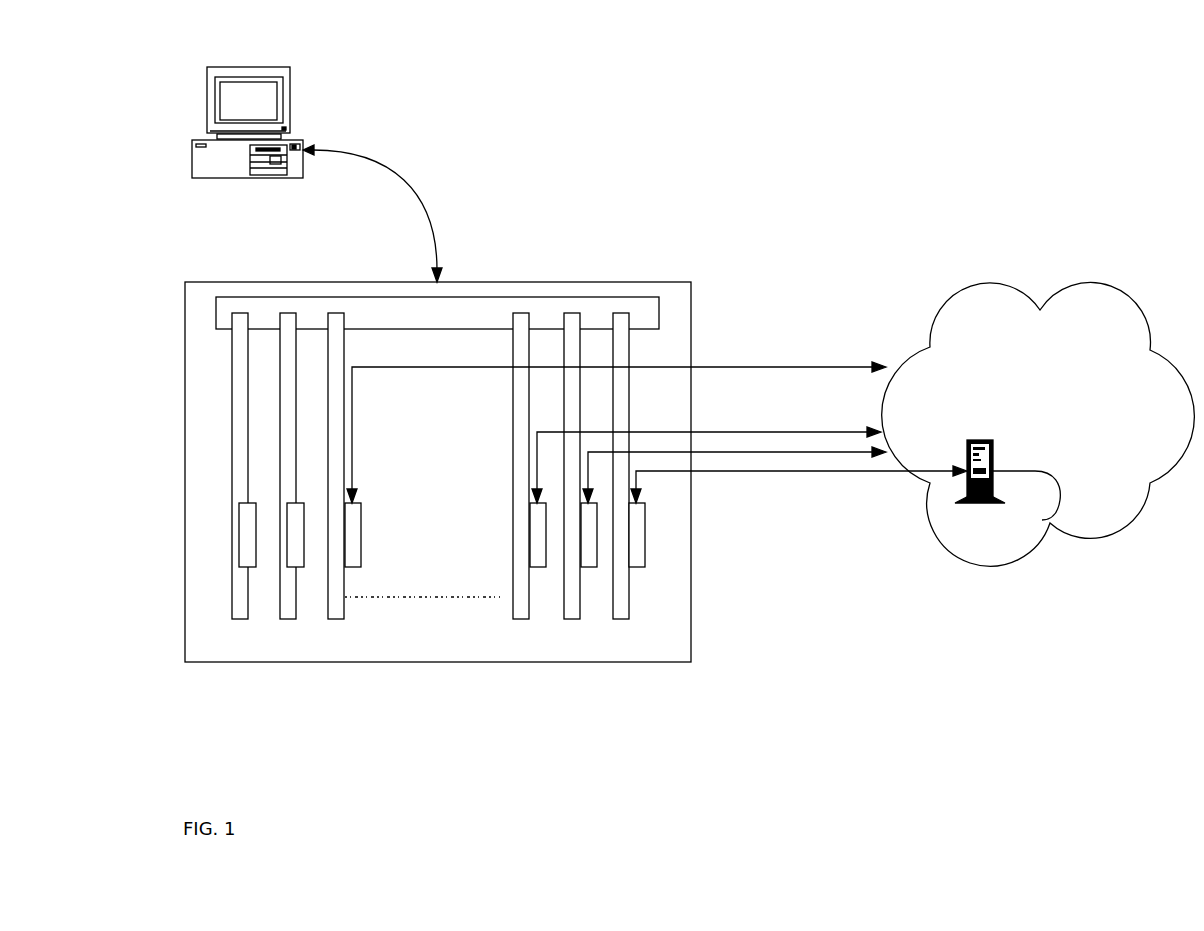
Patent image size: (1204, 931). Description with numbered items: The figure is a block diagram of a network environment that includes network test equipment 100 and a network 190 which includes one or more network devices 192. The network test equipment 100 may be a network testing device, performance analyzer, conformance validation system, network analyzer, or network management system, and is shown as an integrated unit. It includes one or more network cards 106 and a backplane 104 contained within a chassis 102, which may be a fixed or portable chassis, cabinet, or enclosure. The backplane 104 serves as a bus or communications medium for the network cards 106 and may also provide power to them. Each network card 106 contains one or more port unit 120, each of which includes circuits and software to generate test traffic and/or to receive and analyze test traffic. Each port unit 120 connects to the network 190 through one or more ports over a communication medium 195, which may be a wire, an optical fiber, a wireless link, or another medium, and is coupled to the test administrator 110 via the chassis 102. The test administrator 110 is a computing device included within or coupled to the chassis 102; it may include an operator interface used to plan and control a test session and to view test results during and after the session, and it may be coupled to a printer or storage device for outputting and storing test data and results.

The network test equipment 100 is at (630, 88).
The chassis 102 is at (550, 282).
The backplane 104 is at (612, 297).
The network cards 106 is at (639, 675).
The test administrator 110 is at (304, 174).
The port unit 120 is at (632, 567).
The network 190 is at (1038, 424).
The network device 192 is at (1032, 522).
The communication medium 195 is at (754, 471).